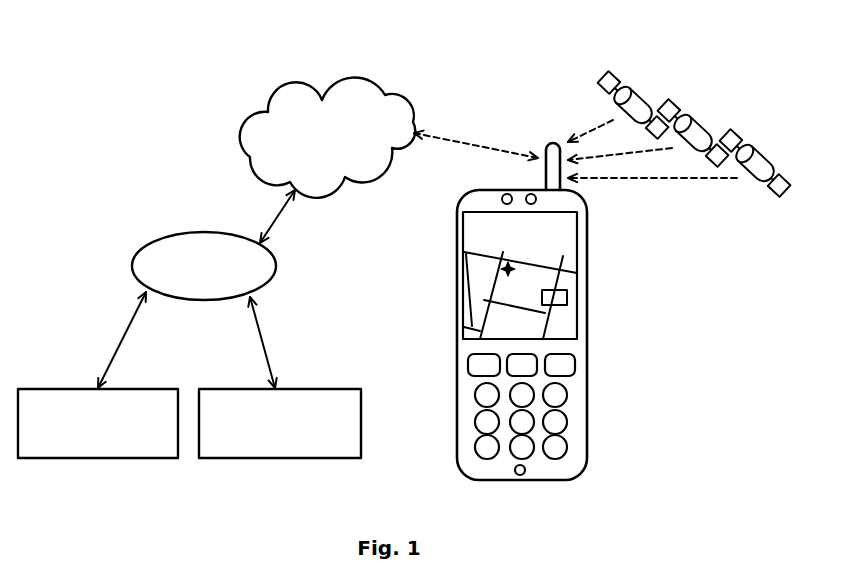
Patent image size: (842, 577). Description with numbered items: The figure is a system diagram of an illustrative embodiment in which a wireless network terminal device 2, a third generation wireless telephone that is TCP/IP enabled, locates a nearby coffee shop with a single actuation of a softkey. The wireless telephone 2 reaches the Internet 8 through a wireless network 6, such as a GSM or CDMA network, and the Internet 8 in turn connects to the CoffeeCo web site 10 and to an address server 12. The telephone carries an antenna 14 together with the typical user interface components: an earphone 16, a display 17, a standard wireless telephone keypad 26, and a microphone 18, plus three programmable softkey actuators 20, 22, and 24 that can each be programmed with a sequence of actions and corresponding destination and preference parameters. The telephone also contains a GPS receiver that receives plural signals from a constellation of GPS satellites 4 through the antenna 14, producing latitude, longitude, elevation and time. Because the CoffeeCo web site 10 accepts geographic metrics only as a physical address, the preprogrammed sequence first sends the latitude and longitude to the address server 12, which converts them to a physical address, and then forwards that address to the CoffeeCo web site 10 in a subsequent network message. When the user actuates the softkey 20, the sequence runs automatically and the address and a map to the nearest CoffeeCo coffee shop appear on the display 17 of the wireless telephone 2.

The wireless network terminal device 2 is at (457, 326).
The GPS satellite 4 is at (652, 93).
The wireless network 6 is at (272, 112).
The Internet 8 is at (158, 240).
The CoffeeCo web site 10 is at (62, 389).
The address server 12 is at (330, 389).
The antenna 14 is at (548, 144).
The earphone 16 is at (502, 199).
The display 17 is at (577, 281).
The microphone 18 is at (526, 470).
The softkey actuator 20 is at (468, 368).
The softkey actuator 22 is at (525, 354).
The softkey actuator 24 is at (575, 367).
The wireless telephone keypad 26 is at (567, 383).